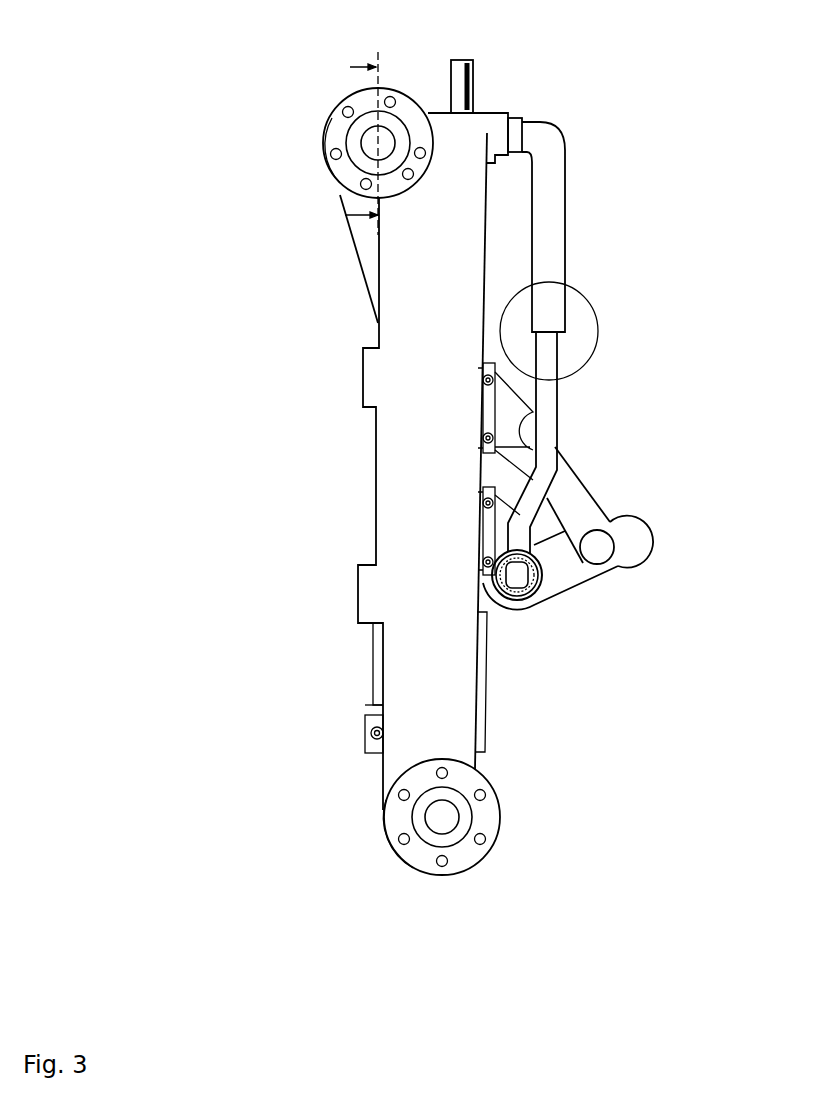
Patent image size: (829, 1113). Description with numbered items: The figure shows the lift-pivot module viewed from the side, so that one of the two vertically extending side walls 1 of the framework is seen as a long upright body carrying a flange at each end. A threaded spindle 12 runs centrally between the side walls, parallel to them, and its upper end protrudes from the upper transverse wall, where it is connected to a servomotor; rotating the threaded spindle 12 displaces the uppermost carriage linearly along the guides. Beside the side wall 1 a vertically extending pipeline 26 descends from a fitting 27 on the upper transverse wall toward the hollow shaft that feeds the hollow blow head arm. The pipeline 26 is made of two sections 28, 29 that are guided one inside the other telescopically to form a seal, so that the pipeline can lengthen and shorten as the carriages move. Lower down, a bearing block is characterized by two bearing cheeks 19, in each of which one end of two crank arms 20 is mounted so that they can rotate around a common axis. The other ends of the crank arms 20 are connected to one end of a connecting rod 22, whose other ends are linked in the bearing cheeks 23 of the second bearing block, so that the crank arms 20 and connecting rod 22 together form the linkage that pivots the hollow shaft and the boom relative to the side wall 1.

The side wall 1 is at (443, 400).
The threaded spindle 12 is at (457, 60).
The bearing cheek 19 is at (497, 605).
The crank arm 20 is at (570, 573).
The connecting rod 22 is at (572, 483).
The bearing cheek 23 is at (507, 403).
The pipeline 26 is at (552, 207).
The fitting 27 is at (398, 84).
The pipeline section 28 is at (558, 243).
The pipeline section 29 is at (545, 357).